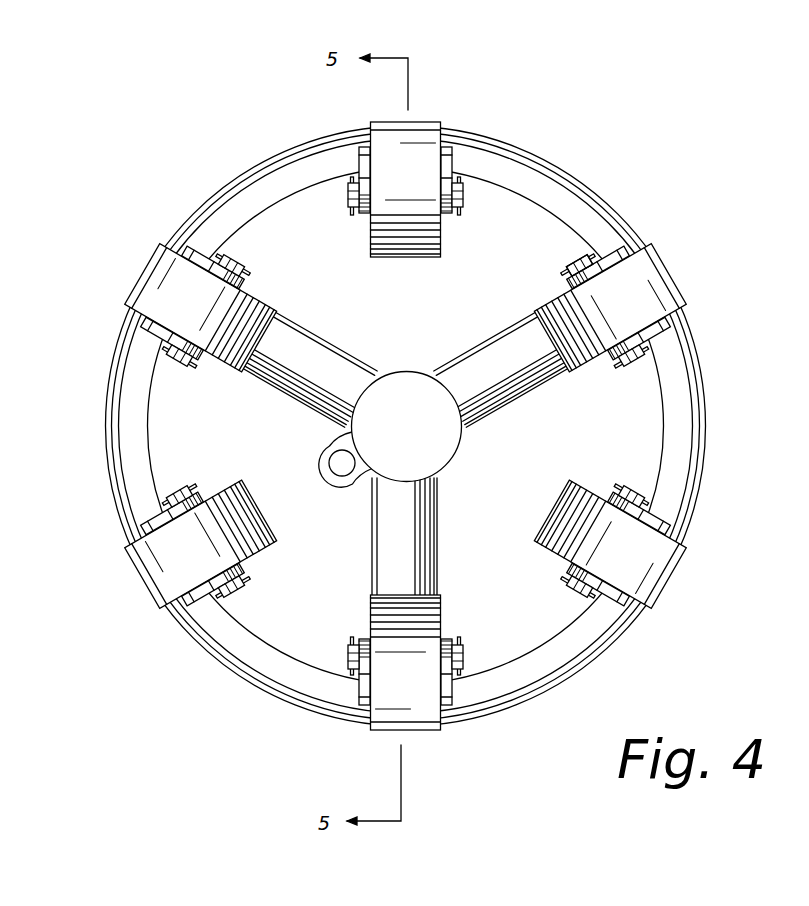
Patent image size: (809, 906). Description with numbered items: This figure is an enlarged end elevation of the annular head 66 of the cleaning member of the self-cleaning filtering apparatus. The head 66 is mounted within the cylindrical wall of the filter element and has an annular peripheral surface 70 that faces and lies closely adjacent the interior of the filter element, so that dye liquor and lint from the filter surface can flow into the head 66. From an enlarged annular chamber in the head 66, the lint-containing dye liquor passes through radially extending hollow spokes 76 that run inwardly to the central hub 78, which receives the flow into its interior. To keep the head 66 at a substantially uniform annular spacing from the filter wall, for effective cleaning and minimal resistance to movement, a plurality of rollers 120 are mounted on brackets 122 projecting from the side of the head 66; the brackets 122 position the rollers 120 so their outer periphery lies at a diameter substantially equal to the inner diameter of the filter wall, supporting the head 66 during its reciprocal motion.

The annular head 66 is at (643, 205).
The annular peripheral surface 70 is at (702, 348).
The hollow spokes 76 is at (405, 448).
The hub 78 is at (463, 452).
The rollers 120 is at (598, 362).
The brackets 122 is at (572, 283).